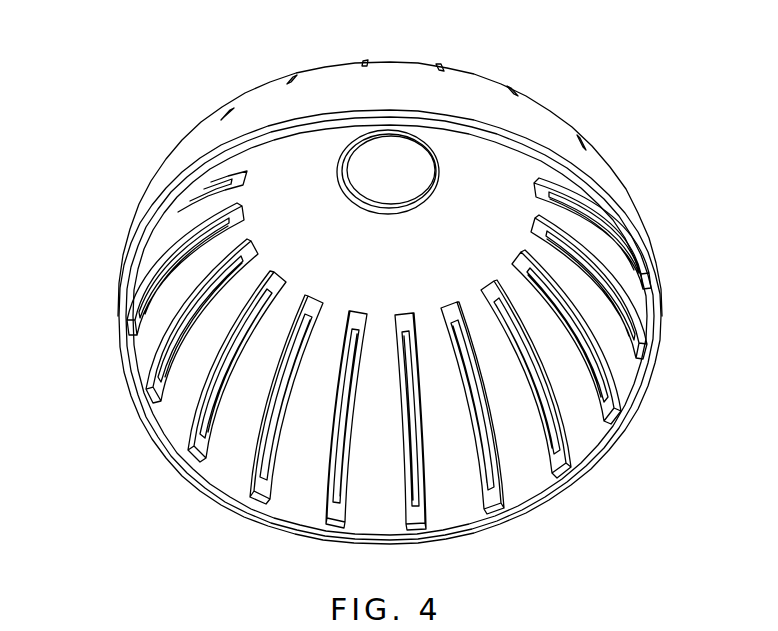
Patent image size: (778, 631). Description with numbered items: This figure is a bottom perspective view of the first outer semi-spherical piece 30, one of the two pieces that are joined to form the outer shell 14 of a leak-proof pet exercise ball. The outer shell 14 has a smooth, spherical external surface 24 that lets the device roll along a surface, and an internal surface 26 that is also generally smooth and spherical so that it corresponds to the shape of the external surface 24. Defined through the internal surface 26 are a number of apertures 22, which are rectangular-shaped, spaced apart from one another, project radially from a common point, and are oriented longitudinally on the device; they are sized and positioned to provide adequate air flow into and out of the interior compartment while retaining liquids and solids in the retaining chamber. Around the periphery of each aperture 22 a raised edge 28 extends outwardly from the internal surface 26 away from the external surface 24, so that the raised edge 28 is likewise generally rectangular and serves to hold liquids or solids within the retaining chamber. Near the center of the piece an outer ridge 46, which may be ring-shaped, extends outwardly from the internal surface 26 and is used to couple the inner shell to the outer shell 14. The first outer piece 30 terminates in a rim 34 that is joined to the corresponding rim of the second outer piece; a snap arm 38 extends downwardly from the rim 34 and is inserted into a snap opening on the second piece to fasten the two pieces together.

The outer shell 14 is at (240, 108).
The apertures 22 is at (290, 350).
The external surface 24 is at (548, 116).
The internal surface 26 is at (297, 488).
The raised edge 28 is at (236, 277).
The first outer semi-spherical piece 30 is at (622, 192).
The rim 34 is at (540, 506).
The snap arm 38 is at (134, 392).
The outer ridge 46 is at (438, 168).